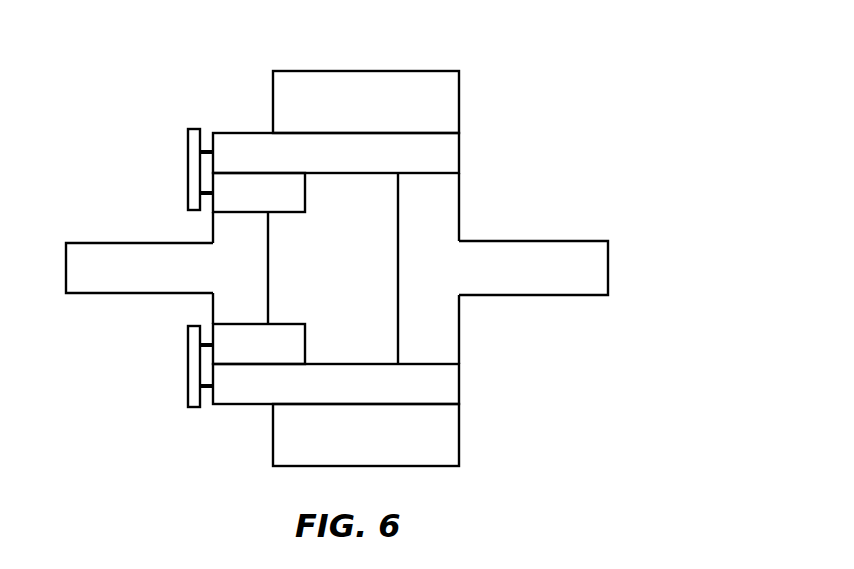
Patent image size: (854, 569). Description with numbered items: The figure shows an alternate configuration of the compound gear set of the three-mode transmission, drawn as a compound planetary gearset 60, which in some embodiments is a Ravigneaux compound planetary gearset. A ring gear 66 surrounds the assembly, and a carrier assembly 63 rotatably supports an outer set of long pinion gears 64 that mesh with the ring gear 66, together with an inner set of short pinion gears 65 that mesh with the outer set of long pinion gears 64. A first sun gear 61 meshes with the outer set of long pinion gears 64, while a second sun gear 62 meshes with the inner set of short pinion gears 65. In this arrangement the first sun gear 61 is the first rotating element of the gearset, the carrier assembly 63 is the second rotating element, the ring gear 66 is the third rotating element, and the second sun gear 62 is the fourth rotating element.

The compound planetary gearset 60 is at (606, 68).
The first sun gear 61 is at (553, 255).
The second sun gear 62 is at (138, 243).
The carrier assembly 63 is at (193, 137).
The outer set of long pinion gears 64 is at (351, 167).
The inner set of short pinion gears 65 is at (274, 207).
The ring gear 66 is at (385, 95).